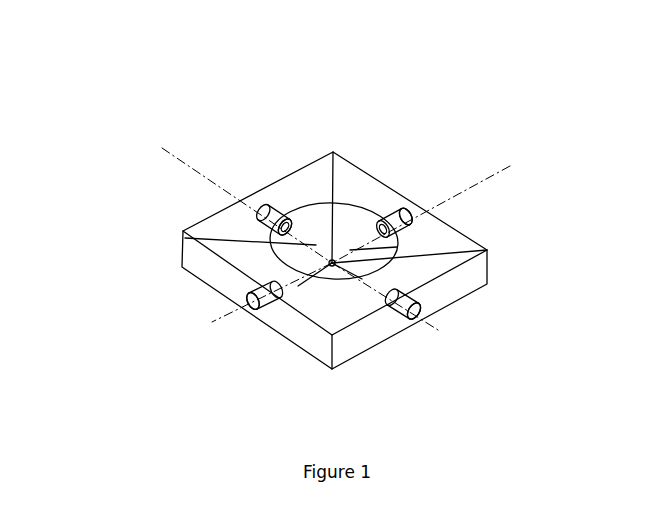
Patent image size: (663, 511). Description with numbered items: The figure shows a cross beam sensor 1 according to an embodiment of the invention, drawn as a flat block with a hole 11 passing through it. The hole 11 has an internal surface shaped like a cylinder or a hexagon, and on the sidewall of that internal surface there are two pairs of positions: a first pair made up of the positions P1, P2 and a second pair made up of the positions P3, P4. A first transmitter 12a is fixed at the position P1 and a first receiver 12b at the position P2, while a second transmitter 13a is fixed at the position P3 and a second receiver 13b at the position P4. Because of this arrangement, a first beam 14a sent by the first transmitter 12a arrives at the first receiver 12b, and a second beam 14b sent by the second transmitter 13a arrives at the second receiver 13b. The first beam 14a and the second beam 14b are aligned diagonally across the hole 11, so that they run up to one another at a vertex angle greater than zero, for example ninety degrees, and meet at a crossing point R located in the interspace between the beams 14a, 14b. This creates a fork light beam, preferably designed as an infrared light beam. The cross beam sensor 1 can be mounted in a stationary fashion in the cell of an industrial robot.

The cross beam sensor 1 is at (360, 173).
The hole 11 is at (320, 218).
The crossing point R is at (334, 150).
The position P1 is at (262, 210).
The position P2 is at (418, 312).
The position P3 is at (404, 218).
The position P4 is at (258, 306).
The first transmitter 12a is at (388, 232).
The first receiver 12b is at (254, 302).
The second transmitter 13a is at (262, 215).
The second receiver 13b is at (407, 304).
The first beam 14a is at (397, 247).
The second beam 14b is at (185, 238).